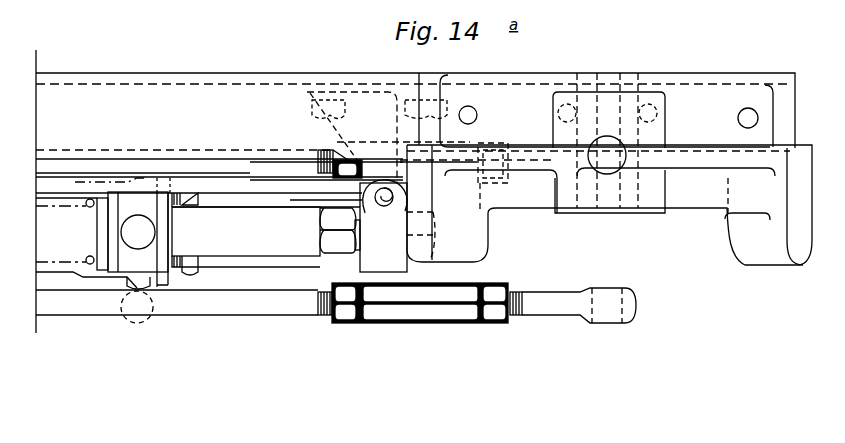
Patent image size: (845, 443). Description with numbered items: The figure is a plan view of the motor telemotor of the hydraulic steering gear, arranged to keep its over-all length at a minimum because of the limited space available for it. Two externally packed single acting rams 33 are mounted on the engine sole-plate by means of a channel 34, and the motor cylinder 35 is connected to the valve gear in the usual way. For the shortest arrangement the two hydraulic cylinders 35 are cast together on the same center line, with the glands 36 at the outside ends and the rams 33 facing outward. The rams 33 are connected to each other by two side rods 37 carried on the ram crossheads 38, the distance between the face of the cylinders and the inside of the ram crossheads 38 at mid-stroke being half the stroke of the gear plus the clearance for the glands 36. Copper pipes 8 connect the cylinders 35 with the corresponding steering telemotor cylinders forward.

The copper pipes 8 is at (80, 190).
The rams 33 is at (285, 193).
The channel 34 is at (371, 137).
The motor cylinder 35 is at (102, 240).
The glands 36 is at (200, 193).
The side rods 37 is at (266, 241).
The ram crossheads 38 is at (383, 226).